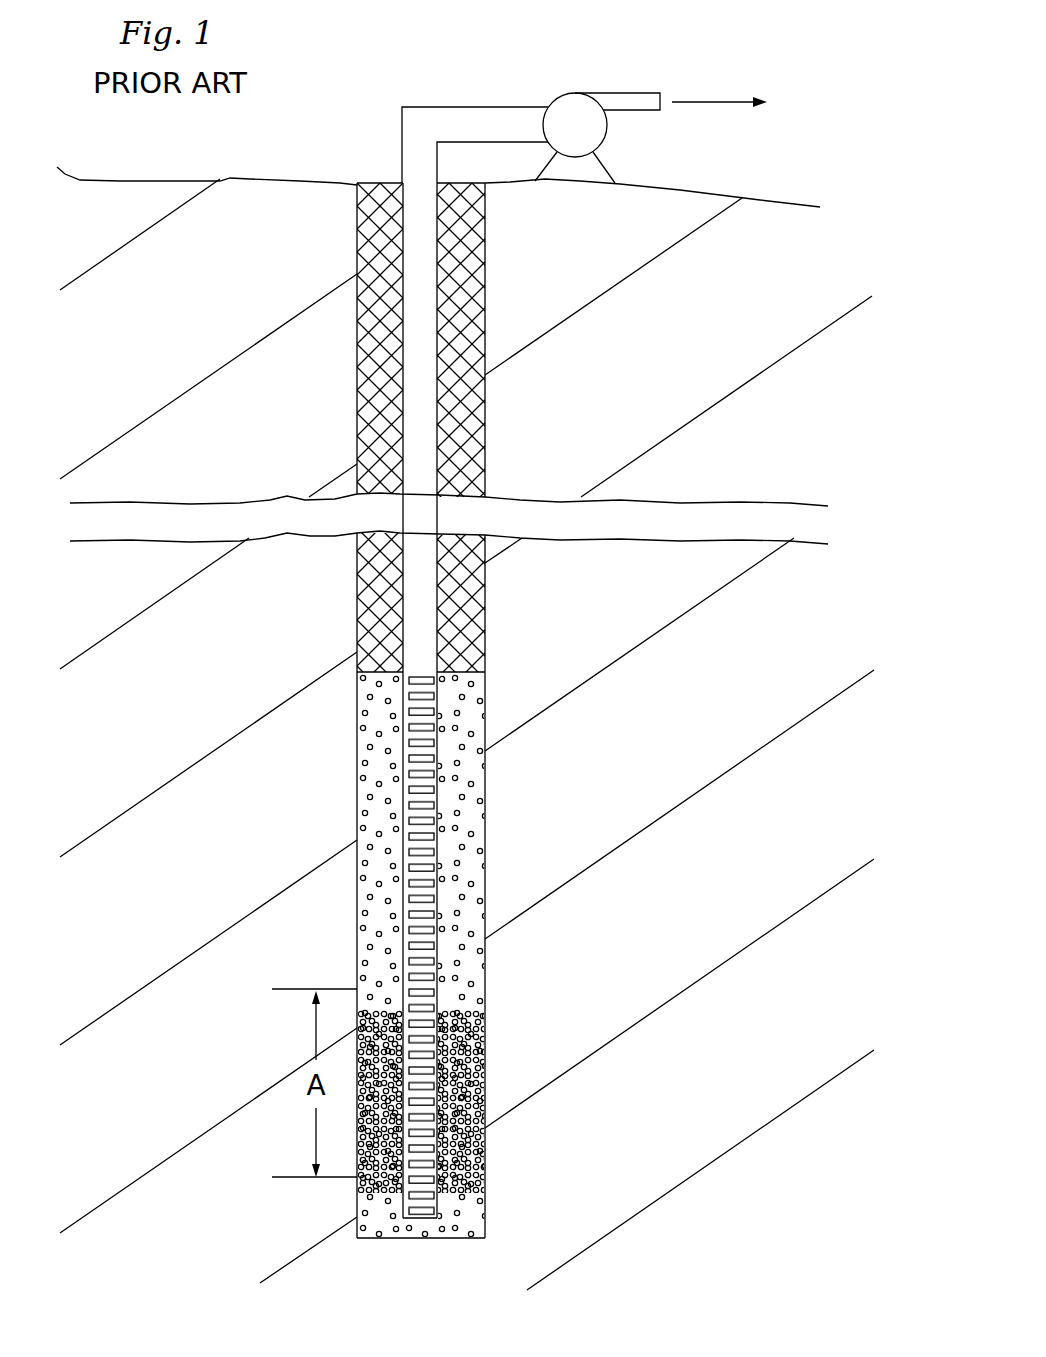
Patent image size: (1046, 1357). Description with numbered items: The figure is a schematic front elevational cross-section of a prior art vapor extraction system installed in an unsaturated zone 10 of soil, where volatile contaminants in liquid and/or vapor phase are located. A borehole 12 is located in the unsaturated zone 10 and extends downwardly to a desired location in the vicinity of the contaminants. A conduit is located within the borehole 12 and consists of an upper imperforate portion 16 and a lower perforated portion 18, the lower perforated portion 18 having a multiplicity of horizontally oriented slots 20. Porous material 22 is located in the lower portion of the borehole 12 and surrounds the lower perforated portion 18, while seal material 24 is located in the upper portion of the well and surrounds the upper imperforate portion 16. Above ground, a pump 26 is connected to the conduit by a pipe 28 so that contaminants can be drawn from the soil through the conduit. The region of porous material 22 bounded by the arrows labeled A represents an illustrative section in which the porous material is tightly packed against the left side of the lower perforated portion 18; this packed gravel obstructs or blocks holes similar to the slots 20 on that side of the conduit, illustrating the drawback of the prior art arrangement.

The unsaturated zone 10 is at (198, 705).
The borehole 12 is at (492, 636).
The upper imperforate portion 16 is at (447, 262).
The lower perforated portion 18 is at (403, 902).
The slots 20 is at (433, 852).
The porous material 22 is at (378, 768).
The seal material 24 is at (367, 365).
The pump 26 is at (570, 93).
The pipe 28 is at (487, 107).